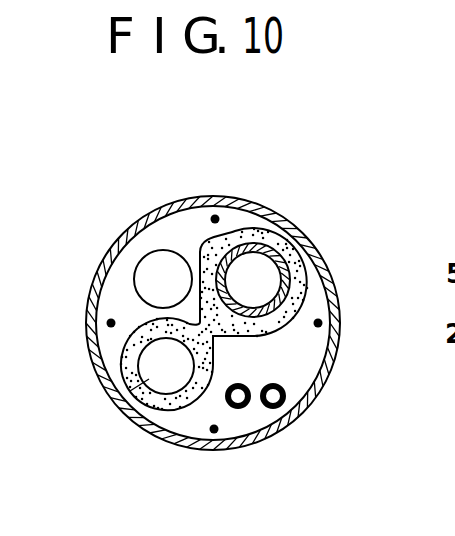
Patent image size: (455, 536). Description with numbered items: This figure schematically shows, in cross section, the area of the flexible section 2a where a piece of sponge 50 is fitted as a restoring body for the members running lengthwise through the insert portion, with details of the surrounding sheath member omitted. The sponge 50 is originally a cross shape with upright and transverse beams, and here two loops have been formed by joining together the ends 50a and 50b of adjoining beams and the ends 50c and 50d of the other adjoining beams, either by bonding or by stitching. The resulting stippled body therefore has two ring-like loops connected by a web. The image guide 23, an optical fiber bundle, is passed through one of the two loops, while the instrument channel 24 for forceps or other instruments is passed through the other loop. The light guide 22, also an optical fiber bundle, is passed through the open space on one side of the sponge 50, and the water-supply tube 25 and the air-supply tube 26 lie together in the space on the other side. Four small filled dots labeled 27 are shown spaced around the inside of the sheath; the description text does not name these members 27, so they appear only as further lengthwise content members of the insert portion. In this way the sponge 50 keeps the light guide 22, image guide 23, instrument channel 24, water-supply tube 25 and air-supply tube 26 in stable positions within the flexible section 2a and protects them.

The flexible section 2a is at (313, 236).
The light guide 22 is at (147, 268).
The image guide 23 is at (117, 398).
The instrument channel 24 is at (265, 315).
The water-supply tube 25 is at (240, 407).
The air-supply tube 26 is at (275, 408).
The tension member 27 is at (215, 216).
The sponge 50 is at (208, 248).
The end of beam 50a is at (250, 230).
The end of beam 50b is at (294, 318).
The end of beam 50c is at (172, 408).
The end of beam 50d is at (122, 360).